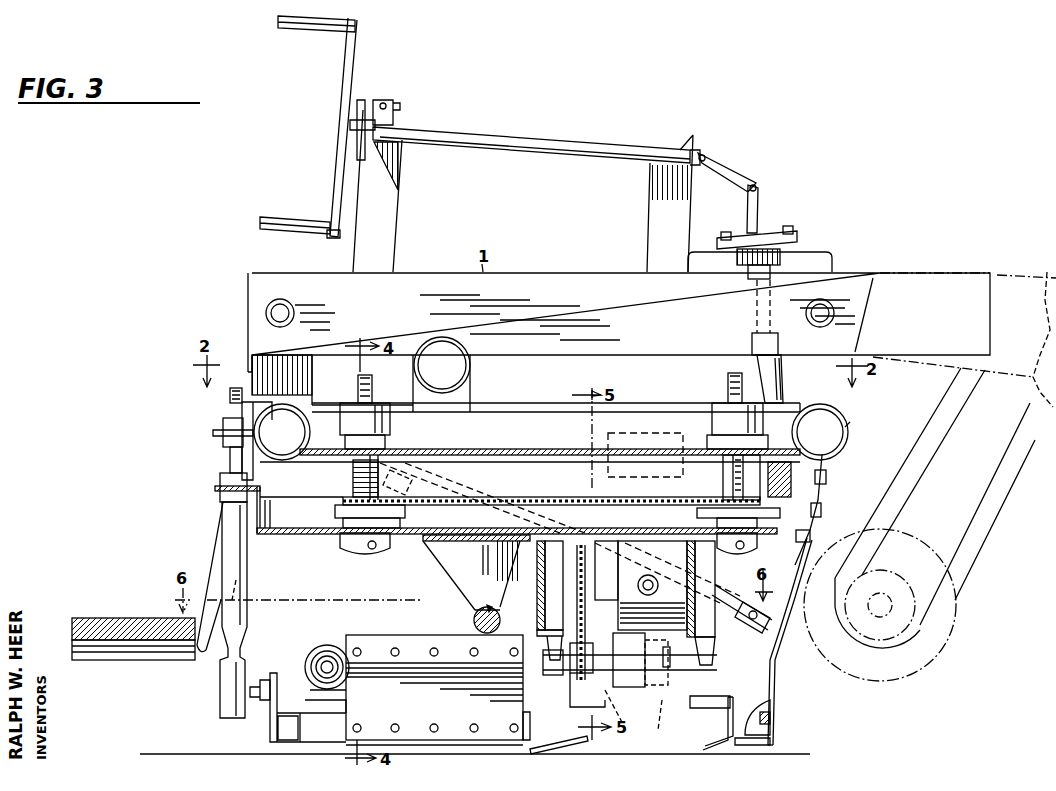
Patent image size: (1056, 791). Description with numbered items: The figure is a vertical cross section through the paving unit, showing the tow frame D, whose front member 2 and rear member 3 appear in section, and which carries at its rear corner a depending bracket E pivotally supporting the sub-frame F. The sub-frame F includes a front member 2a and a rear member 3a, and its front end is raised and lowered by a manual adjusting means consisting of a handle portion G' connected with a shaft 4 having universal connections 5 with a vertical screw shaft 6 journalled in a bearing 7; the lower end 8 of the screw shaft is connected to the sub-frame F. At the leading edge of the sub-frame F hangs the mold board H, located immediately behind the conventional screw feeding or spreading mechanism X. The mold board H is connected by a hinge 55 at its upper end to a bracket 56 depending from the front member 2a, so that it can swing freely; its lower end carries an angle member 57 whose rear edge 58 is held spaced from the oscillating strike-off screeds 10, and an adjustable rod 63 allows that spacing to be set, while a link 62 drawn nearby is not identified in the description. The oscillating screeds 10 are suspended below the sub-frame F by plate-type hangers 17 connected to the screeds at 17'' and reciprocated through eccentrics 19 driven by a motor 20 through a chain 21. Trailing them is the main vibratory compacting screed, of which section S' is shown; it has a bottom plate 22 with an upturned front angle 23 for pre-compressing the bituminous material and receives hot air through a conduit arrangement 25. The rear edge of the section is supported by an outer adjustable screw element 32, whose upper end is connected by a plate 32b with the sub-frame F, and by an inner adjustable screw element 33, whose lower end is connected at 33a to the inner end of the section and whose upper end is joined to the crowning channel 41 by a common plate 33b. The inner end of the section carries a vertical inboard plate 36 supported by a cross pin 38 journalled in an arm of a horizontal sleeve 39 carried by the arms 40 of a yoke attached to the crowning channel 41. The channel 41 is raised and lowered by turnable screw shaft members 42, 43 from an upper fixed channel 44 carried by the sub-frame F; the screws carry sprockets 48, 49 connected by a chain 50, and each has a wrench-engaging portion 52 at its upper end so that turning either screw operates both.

The front member 2 is at (826, 301).
The front member 2a is at (842, 428).
The rear member 3 is at (286, 300).
The rear member 3a is at (282, 432).
The shaft 4 is at (505, 138).
The universal connections 5 is at (745, 175).
The vertical screw shaft 6 is at (783, 379).
The bearing 7 is at (768, 240).
The lower end 8 is at (820, 432).
The oscillating strike-off screeds 10 is at (726, 720).
The plate-type hangers 17 is at (650, 685).
The hanger connection 17'' is at (633, 719).
The eccentrics 19 is at (638, 690).
The motor 20 is at (618, 584).
The chain 21 is at (587, 619).
The bottom plate 22 is at (448, 750).
The upturned front angle 23 is at (560, 747).
The conduit arrangement 25 is at (470, 368).
The outer adjustable screw elements 32 is at (228, 419).
The plates 32b is at (213, 434).
The inner adjustable screw elements 33 is at (240, 576).
The lower end connection 33a is at (255, 685).
The common plate 33b is at (216, 489).
The vertical inboard plate 36 is at (400, 704).
The cross pin 38 is at (474, 619).
The horizontal sleeve 39 is at (491, 607).
The arms 40 is at (473, 574).
The crowning channel 41 is at (296, 535).
The turnable screw shaft member 42 is at (354, 483).
The turnable screw shaft member 43 is at (730, 481).
The upper fixed support or channel 44 is at (520, 448).
The sprocket 48 is at (343, 504).
The sprocket 49 is at (716, 506).
The chain 50 is at (490, 496).
The wrench or tool engaging portion 52 is at (727, 384).
The hinge 55 is at (831, 500).
The bracket 56 is at (828, 464).
The angle member 57 is at (762, 745).
The rear edge 58 is at (771, 716).
The link 62 is at (728, 622).
The adjustable rod 63 is at (545, 520).
The tow frame D is at (654, 314).
The depending brackets E is at (313, 394).
The sub-frame F is at (660, 403).
The handle portion G' is at (308, 127).
The mold board H is at (774, 684).
The screed section S' is at (308, 707).
The screw feeding or spreading mechanism X is at (946, 604).